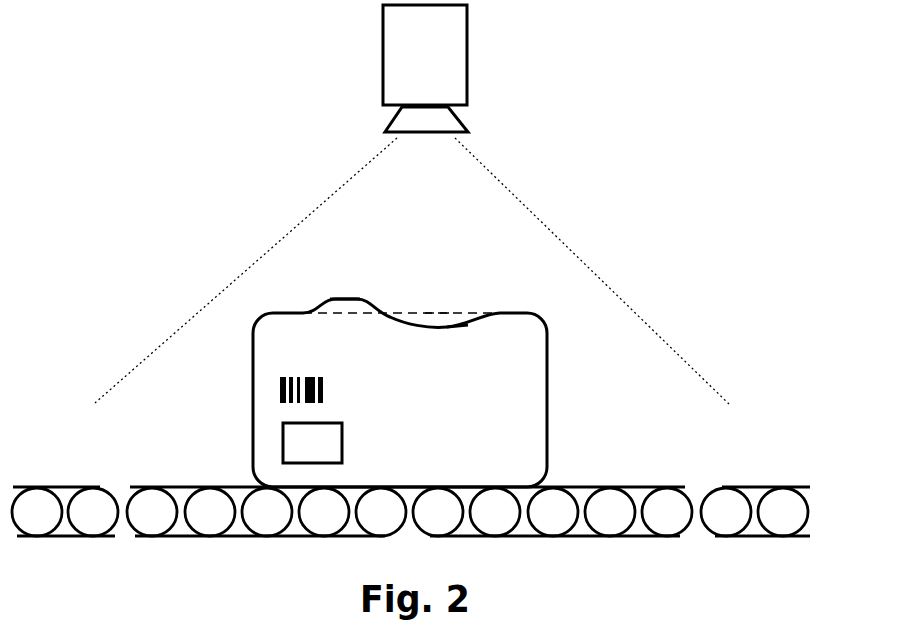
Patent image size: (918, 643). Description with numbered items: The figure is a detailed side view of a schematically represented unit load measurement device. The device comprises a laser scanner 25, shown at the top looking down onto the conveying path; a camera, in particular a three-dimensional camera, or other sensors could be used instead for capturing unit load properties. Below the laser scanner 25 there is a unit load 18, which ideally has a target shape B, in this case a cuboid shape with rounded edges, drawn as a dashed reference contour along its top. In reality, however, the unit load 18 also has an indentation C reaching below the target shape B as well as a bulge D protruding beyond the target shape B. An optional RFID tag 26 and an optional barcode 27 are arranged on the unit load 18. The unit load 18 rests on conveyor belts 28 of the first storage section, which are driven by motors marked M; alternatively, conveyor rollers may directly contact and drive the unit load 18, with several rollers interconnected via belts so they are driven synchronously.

The laser scanner 25 is at (390, 37).
The unit load 18 is at (530, 383).
The barcode 27 is at (283, 390).
The RFID tag 26 is at (302, 445).
The conveyor belts 28 is at (185, 487).
The bulge D is at (346, 298).
The target shape B is at (436, 311).
The indentation C is at (460, 327).